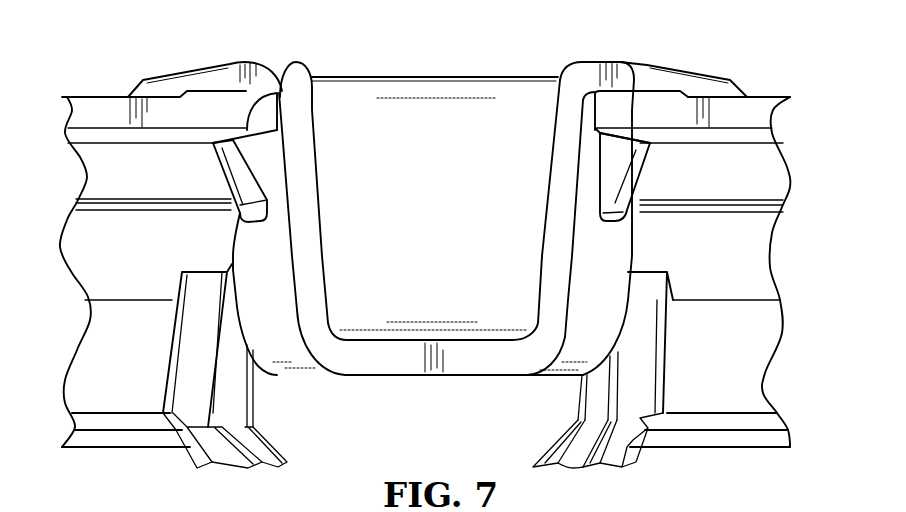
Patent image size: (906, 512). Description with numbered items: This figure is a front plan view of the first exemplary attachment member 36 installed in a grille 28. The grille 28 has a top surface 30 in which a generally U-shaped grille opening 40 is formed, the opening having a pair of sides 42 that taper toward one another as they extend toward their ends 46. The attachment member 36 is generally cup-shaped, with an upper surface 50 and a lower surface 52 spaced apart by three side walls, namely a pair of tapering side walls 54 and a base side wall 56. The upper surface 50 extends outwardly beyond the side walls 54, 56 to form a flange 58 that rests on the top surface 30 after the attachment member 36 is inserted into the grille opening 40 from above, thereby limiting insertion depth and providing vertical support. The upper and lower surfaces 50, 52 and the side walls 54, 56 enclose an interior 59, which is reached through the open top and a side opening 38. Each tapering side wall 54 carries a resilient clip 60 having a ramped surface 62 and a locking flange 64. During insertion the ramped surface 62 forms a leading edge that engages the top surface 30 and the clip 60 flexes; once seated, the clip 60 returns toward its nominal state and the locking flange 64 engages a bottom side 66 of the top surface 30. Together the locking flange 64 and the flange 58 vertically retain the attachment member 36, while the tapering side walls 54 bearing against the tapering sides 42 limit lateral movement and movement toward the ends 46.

The grille 28 is at (745, 240).
The top surface 30 is at (85, 97).
The attachment member 36 is at (474, 78).
The side opening 38 is at (380, 308).
The grille opening 40 is at (271, 87).
The sides 42 is at (263, 102).
The ends 46 is at (277, 123).
The upper surface 50 is at (578, 62).
The lower surface 52 is at (452, 337).
The tapering side walls 54 is at (305, 233).
The base side wall 56 is at (407, 120).
The flange 58 is at (228, 78).
The interior 59 is at (527, 105).
The resilient clip 60 is at (226, 167).
The ramped surface 62 is at (228, 157).
The locking flange 64 is at (268, 93).
The bottom side 66 is at (97, 133).